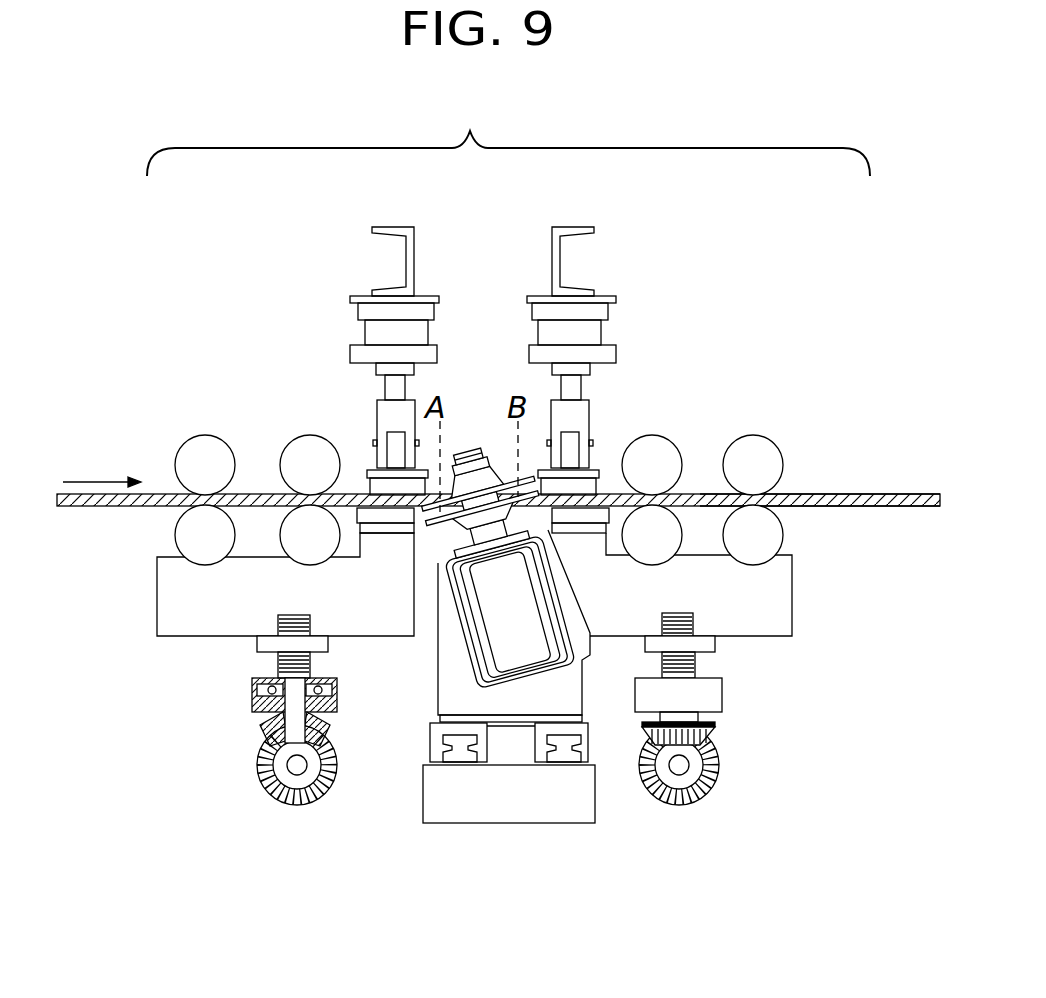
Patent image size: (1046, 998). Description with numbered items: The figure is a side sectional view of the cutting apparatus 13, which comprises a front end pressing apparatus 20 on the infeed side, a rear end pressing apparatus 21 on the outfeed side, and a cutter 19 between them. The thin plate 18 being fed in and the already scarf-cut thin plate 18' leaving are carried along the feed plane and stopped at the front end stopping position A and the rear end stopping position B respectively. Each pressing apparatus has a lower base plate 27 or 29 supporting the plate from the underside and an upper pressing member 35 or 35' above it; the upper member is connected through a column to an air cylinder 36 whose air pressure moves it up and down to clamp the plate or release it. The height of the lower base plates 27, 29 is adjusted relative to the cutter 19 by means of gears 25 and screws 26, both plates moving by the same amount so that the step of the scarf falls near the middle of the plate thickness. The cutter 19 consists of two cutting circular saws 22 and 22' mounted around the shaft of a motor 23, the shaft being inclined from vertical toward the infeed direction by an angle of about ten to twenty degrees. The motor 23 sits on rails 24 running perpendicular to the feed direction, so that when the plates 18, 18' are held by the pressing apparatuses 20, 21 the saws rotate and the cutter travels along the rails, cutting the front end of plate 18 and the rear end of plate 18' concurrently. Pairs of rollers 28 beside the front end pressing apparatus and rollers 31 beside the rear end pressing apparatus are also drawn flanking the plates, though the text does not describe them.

The cutting apparatus 13 is at (508, 133).
The thin plate 18 is at (497, 438).
The thin plate 18' is at (820, 453).
The cutter 19 is at (484, 405).
The front end pressing apparatus 20 is at (280, 298).
The rear end pressing apparatus 21 is at (758, 337).
The cutting circular saw 22 is at (553, 421).
The cutting circular saw 22' is at (444, 553).
The motor 23 is at (508, 633).
The rails 24 is at (445, 757).
The gears 25 is at (257, 763).
The screws 26 is at (280, 660).
The lower base plate 27 is at (165, 578).
The upstream feed rollers 28 is at (275, 443).
The lower base plate 29 is at (787, 613).
The downstream feed rollers 31 is at (748, 445).
The upper pressing member 35 is at (355, 452).
The upper pressing member 35' is at (620, 451).
The air cylinder 36 is at (373, 327).